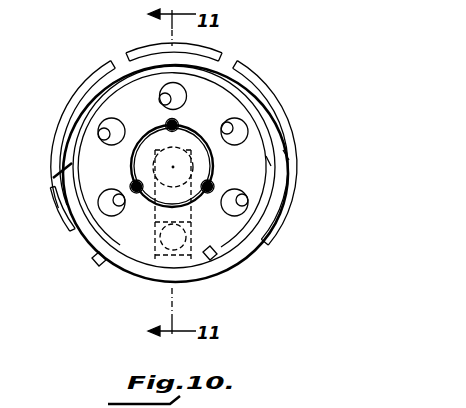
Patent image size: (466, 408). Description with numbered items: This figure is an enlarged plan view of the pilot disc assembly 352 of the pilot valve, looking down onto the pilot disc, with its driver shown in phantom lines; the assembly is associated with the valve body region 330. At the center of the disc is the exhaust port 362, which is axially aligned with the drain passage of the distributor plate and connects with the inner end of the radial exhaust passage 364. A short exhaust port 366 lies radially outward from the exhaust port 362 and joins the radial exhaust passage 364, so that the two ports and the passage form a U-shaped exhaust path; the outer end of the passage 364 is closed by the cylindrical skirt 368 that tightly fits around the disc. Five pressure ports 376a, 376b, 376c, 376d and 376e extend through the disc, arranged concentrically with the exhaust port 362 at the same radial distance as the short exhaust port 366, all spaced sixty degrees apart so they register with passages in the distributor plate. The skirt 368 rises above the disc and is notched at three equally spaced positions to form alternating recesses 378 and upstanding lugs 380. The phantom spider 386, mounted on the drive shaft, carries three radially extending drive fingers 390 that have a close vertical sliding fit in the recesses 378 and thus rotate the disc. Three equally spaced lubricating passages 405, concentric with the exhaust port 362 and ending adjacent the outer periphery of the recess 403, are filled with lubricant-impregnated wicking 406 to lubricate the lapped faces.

The shaft 330 is at (0, 368).
The pilot disc assembly 352 is at (266, 82).
The exhaust port 362 is at (163, 153).
The radial exhaust passage 364 is at (190, 223).
The short exhaust port 366 is at (163, 287).
The cylindrical skirt 368 is at (78, 117).
The pressure port 376a is at (120, 213).
The pressure port 376b is at (99, 131).
The pressure port 376c is at (161, 88).
The pressure port 376d is at (243, 122).
The pressure port 376e is at (247, 213).
The recess 378 is at (290, 158).
The upstanding lug 380 is at (61, 146).
The spider 386 is at (226, 44).
The drive finger 390 is at (141, 44).
The recess 403 is at (204, 148).
The lubricating passage 405 is at (178, 122).
The lubricant-impregnated wicking 406 is at (130, 187).